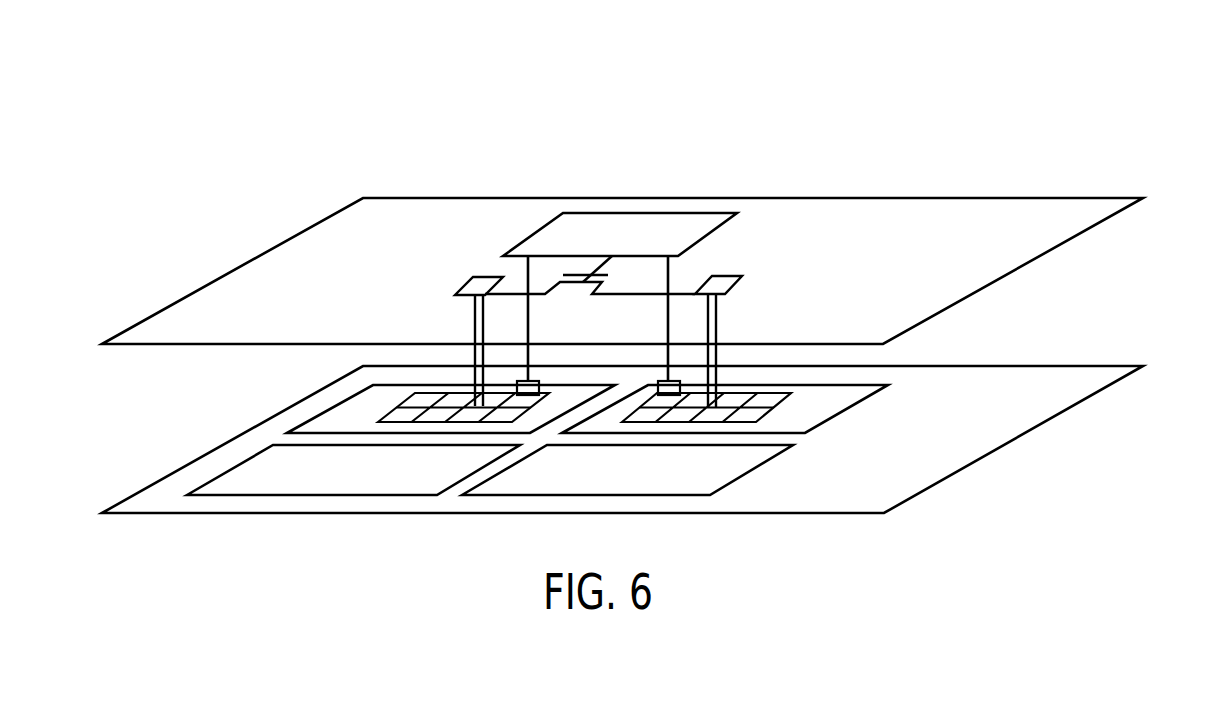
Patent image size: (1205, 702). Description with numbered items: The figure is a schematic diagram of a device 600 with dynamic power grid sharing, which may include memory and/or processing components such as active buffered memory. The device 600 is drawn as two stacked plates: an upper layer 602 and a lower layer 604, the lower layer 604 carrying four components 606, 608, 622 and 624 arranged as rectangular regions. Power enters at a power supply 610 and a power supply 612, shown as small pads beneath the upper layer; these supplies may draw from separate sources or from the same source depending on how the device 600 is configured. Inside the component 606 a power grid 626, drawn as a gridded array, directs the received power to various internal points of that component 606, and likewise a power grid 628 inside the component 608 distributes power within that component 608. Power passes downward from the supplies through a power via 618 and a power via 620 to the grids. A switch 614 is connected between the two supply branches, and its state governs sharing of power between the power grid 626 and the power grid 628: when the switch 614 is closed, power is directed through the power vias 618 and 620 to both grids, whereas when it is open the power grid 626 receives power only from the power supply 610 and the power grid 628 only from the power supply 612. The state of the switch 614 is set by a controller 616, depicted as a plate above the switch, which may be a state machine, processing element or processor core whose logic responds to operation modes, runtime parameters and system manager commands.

The device 600 is at (789, 105).
The layer 602 is at (1020, 270).
The layer 604 is at (1008, 442).
The component 606 is at (328, 408).
The component 608 is at (847, 410).
The power supply 610 is at (465, 292).
The power supply 612 is at (733, 287).
The switch 614 is at (583, 284).
The controller 616 is at (637, 212).
The power via 618 is at (473, 328).
The power via 620 is at (718, 322).
The component 622 is at (233, 467).
The component 624 is at (753, 467).
The power grid 626 is at (418, 423).
The power grid 628 is at (680, 423).